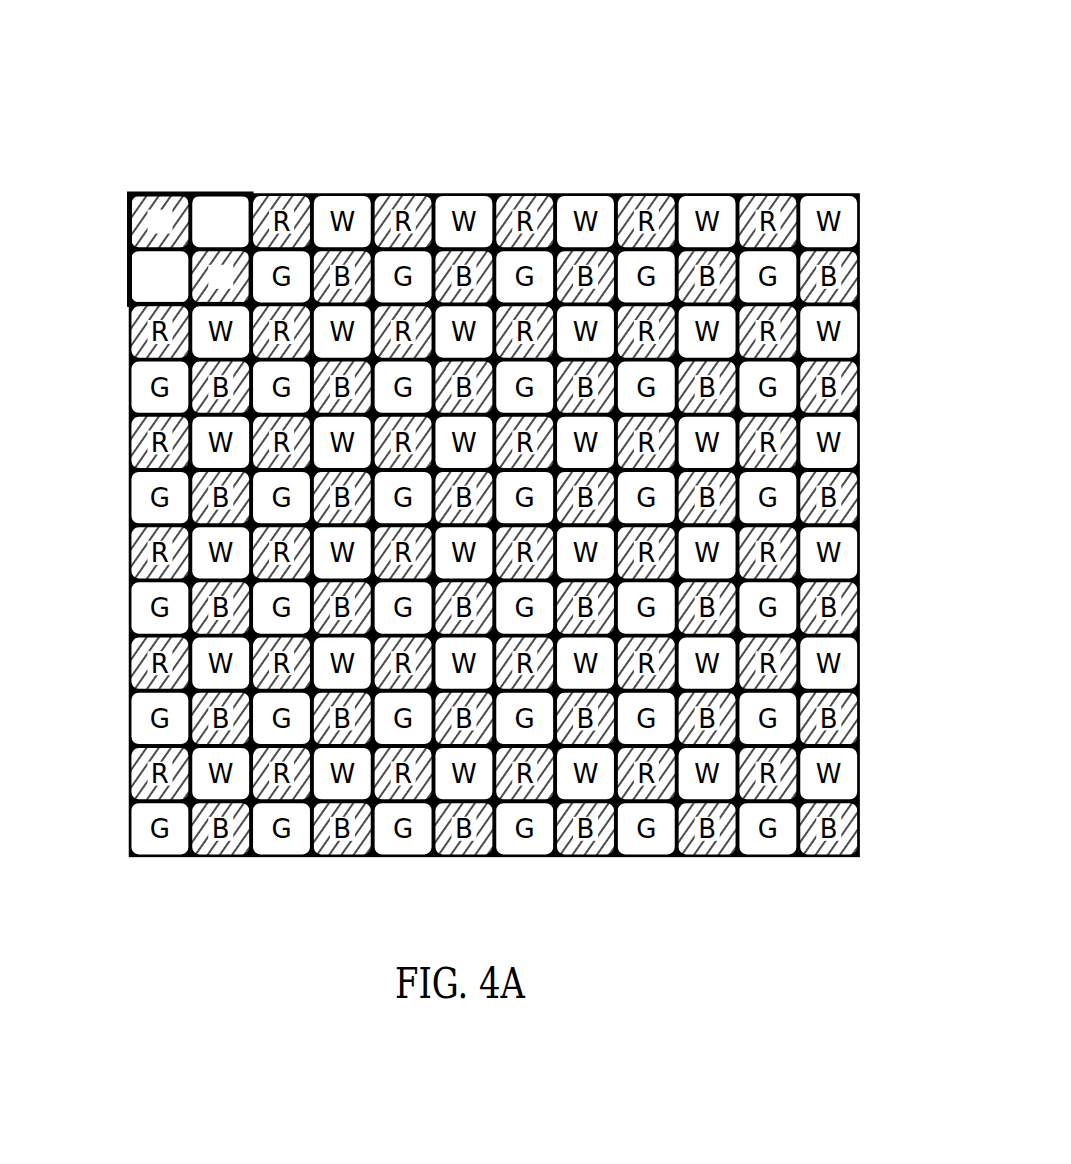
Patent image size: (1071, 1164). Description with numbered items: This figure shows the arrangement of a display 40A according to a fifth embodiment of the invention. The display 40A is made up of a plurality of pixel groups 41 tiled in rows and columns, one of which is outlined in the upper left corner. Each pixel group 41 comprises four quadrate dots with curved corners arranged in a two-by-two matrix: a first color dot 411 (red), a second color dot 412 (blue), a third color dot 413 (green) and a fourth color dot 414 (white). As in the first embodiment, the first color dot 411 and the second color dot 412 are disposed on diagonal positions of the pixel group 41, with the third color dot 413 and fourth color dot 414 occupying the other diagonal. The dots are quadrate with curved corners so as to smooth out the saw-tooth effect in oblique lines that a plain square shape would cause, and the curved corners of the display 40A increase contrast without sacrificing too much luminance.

The display 40A is at (489, 433).
The pixel group 41 is at (160, 176).
The first color dot 411 is at (167, 193).
The second color dot 412 is at (193, 298).
The third color dot 413 is at (137, 258).
The fourth color dot 414 is at (207, 193).